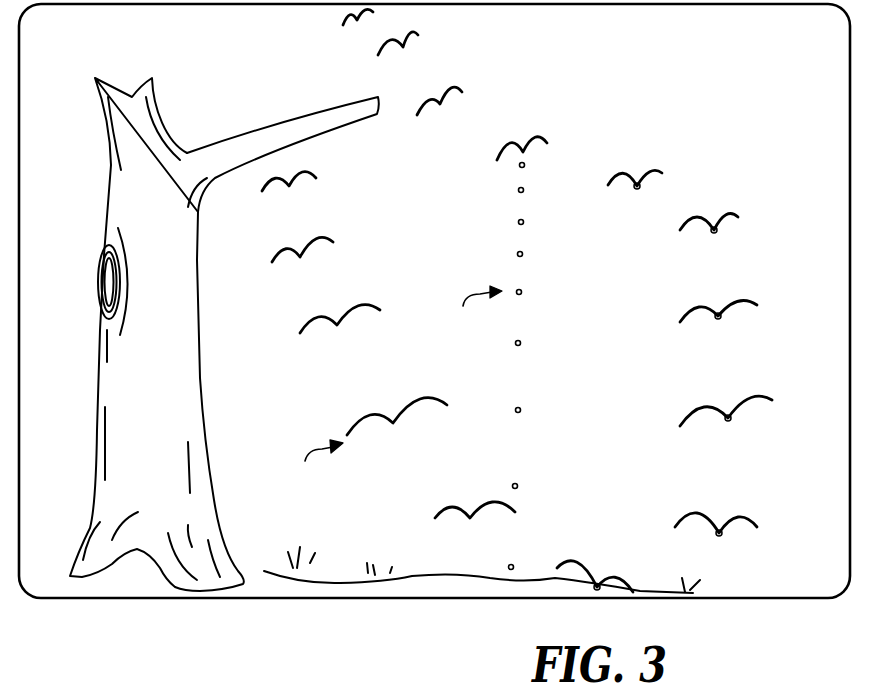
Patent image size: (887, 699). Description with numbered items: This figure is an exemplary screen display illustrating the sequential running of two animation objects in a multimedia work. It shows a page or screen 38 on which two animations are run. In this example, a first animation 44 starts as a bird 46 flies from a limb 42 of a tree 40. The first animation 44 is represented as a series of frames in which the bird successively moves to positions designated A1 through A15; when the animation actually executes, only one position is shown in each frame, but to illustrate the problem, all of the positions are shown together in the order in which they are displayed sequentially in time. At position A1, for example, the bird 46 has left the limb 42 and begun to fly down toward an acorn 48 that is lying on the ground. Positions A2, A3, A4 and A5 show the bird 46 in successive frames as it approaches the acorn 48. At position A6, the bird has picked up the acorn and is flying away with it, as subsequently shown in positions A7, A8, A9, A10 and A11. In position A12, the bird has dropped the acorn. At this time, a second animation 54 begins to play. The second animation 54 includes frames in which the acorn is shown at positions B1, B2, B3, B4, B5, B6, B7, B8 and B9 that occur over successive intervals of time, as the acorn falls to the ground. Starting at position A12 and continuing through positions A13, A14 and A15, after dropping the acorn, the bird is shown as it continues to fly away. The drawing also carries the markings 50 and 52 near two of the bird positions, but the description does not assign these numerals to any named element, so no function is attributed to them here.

The page or screen 38 is at (719, 81).
The tree 40 is at (200, 378).
The limb 42 is at (302, 122).
The first animation 44 is at (316, 465).
The bird 46 is at (309, 192).
The acorn 48 is at (586, 587).
The bird icon A7 with perched indicator 50 is at (715, 513).
The bird icon A12 52 is at (549, 132).
The second animation 54 is at (474, 309).
The position A1 is at (291, 187).
The position A2 is at (323, 245).
The position A3 is at (359, 318).
The position A4 is at (418, 412).
The position A5 is at (493, 518).
The position A6 is at (572, 609).
The position A7 is at (657, 504).
The position A8 is at (747, 409).
The position A9 is at (738, 312).
The position A10 is at (734, 224).
The position A11 is at (660, 177).
The position A12 is at (560, 125).
The position A13 is at (467, 97).
The position A14 is at (425, 39).
The position A15 is at (331, 25).
The position B1 is at (546, 167).
The position B2 is at (545, 192).
The position B3 is at (545, 224).
The position B4 is at (541, 256).
The position B5 is at (541, 294).
The position B6 is at (540, 344).
The position B7 is at (540, 410).
The position B8 is at (537, 488).
The position B9 is at (494, 568).